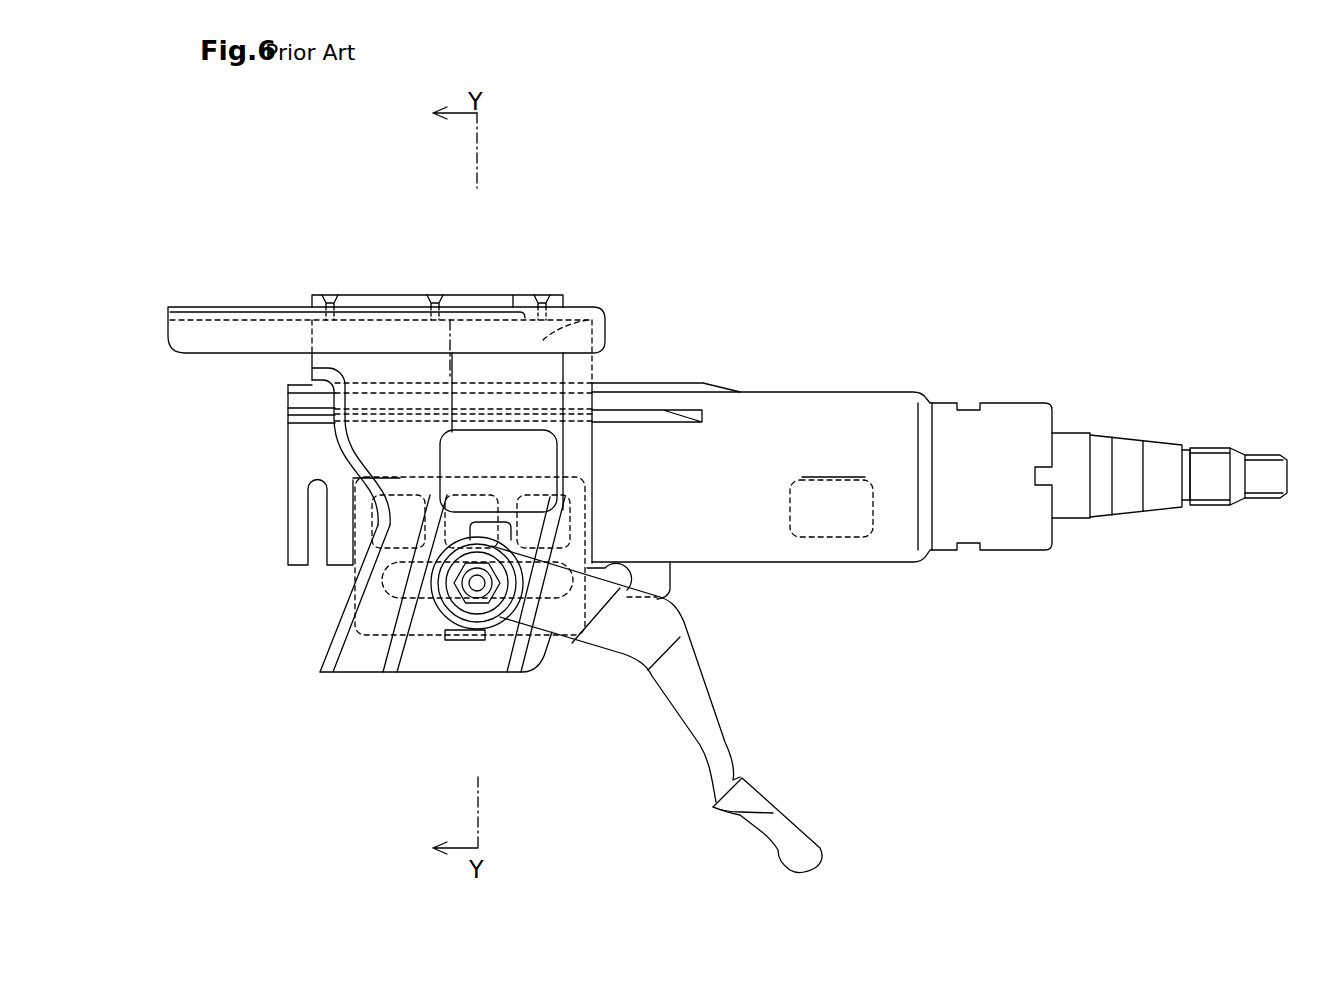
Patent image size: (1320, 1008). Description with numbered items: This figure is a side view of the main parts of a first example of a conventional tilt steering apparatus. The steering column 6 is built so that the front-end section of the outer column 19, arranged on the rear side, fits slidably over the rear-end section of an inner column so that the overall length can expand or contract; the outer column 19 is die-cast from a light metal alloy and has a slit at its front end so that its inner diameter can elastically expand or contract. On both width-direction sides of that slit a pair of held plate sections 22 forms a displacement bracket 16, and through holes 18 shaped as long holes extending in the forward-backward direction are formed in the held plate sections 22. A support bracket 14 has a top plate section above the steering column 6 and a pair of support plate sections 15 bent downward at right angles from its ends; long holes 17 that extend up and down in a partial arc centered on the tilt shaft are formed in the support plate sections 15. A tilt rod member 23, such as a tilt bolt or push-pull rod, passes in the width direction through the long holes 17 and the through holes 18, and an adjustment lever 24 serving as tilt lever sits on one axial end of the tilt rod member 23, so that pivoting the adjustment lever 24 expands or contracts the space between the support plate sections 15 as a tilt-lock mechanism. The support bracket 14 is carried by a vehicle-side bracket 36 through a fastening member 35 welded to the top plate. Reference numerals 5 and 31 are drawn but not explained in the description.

The steering shaft 5 is at (1127, 450).
The steering column 6 is at (903, 366).
The support bracket 14 is at (465, 367).
The support plate sections 15 is at (378, 438).
The displacement bracket 16 is at (353, 672).
The long holes 17 is at (443, 637).
The through holes 18 is at (388, 672).
The outer column 19 is at (780, 405).
The held plate sections 22 is at (372, 618).
The tilt rod member 23 is at (517, 637).
The adjustment lever 24 is at (675, 668).
The nut 31 is at (467, 637).
The fastening member 35 is at (495, 300).
The vehicle-side bracket 36 is at (543, 340).